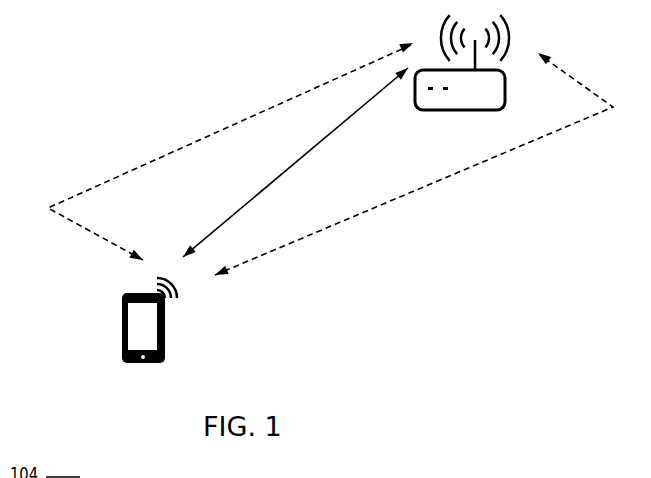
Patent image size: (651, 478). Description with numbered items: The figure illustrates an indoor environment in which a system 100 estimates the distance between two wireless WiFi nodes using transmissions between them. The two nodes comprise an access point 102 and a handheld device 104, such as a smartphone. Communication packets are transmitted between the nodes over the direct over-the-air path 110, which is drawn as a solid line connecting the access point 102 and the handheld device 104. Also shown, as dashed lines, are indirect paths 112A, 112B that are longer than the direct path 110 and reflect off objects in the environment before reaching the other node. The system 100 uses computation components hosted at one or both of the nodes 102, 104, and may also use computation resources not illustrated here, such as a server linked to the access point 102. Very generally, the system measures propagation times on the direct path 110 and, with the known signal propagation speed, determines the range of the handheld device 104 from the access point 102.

The system 100 is at (436, 330).
The access point 102 is at (421, 111).
The handheld device 104 is at (145, 364).
The direct over-the-air path 110 is at (297, 163).
The indirect path 112A is at (197, 140).
The indirect path 112B is at (415, 191).